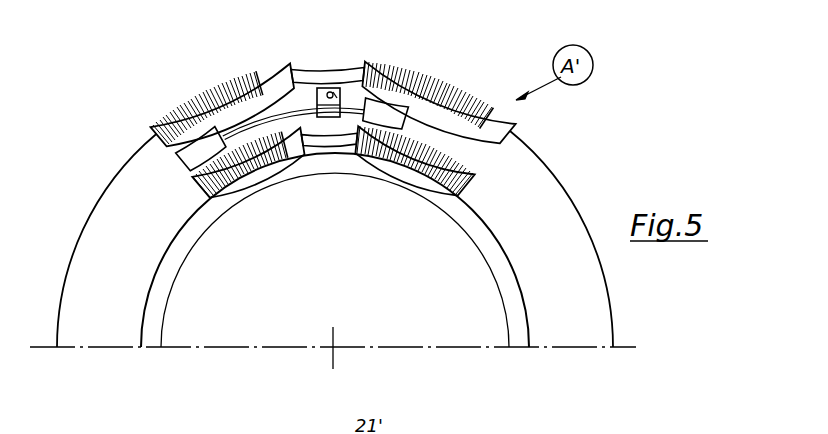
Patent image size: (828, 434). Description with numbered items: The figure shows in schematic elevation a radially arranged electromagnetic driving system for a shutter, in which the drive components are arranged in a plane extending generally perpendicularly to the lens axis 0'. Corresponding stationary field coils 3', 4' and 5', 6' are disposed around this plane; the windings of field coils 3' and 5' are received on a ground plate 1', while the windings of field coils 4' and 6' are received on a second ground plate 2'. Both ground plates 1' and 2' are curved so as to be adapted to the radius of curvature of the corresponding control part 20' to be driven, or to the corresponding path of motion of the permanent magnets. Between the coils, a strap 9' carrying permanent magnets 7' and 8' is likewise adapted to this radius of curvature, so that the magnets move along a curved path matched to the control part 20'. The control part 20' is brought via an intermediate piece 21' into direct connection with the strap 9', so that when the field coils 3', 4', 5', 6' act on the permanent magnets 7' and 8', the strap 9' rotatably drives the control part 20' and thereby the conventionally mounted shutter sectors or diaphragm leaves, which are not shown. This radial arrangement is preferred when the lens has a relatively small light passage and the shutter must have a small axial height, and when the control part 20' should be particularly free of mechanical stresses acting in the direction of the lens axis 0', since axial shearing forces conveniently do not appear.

The lens axis 0' is at (356, 358).
The ground plate 1' is at (327, 47).
The ground plate 2' is at (329, 180).
The stationary field coil 3' is at (223, 100).
The stationary field coil 4' is at (248, 198).
The stationary field coil 5' is at (438, 99).
The stationary field coil 6' is at (414, 197).
The permanent magnet 7' is at (182, 166).
The permanent magnet 8' is at (403, 120).
The strap 9' is at (296, 75).
The control part 20' is at (335, 239).
The intermediate piece 21' is at (365, 64).